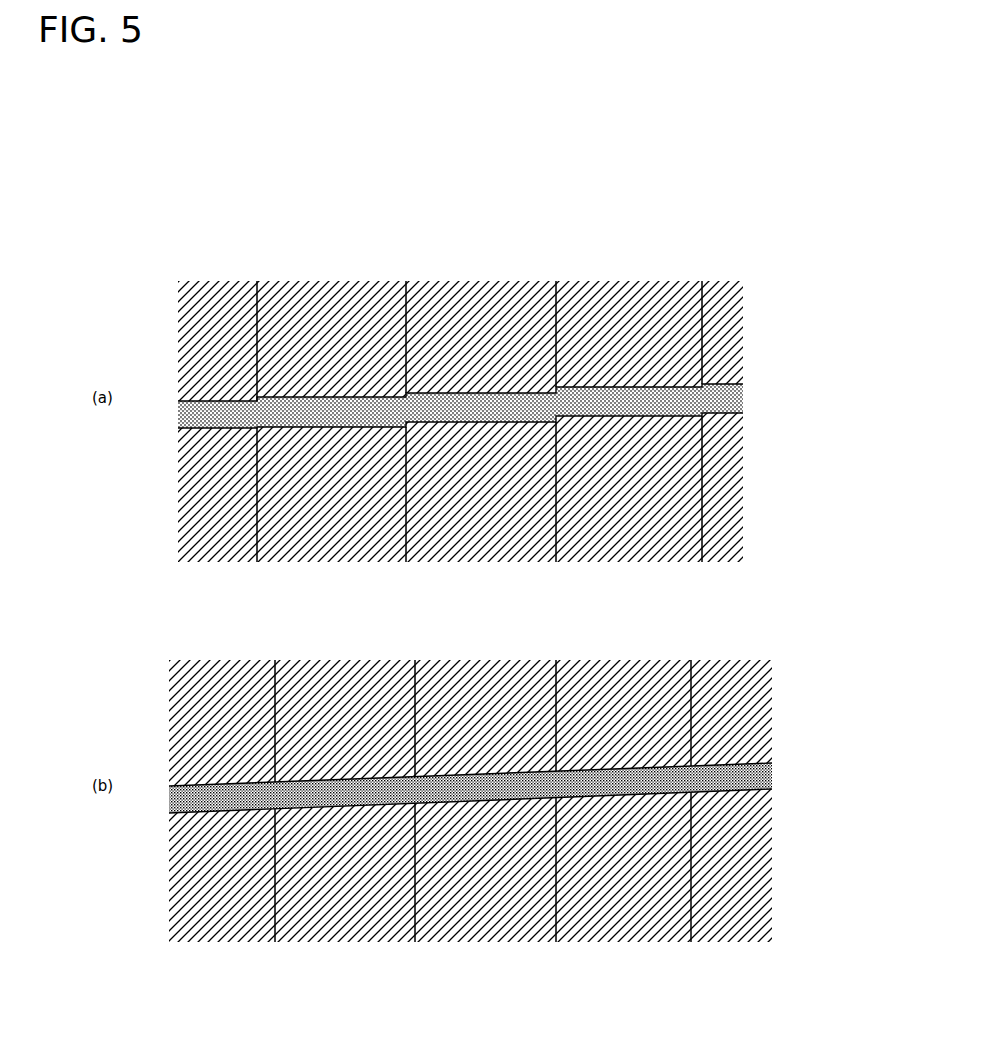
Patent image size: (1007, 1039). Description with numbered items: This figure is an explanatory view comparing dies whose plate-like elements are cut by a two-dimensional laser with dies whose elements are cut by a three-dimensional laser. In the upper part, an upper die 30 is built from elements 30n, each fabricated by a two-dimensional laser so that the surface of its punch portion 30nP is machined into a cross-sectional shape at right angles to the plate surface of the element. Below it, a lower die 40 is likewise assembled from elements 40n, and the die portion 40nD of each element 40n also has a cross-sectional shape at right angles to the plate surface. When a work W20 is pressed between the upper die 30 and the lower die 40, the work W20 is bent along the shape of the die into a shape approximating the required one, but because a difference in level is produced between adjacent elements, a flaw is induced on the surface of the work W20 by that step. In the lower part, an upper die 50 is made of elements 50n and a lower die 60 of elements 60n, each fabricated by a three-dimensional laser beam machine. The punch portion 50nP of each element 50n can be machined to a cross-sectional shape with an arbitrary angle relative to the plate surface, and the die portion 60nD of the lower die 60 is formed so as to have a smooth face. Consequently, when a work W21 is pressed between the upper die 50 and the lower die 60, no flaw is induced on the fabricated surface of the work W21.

The upper die 30 is at (450, 268).
The element of upper die 30n is at (605, 292).
The punch portion 30nP is at (635, 387).
The work W20 is at (705, 399).
The die portion 40nD is at (660, 407).
The lower die 40 is at (496, 580).
The element of lower die 40n is at (577, 548).
The upper die 50 is at (397, 646).
The element of upper die 50n is at (632, 692).
The punch portion 50nP is at (628, 774).
The work W21 is at (625, 786).
The die portion 60nD is at (690, 786).
The lower die 60 is at (426, 956).
The element of lower die 60n is at (612, 918).